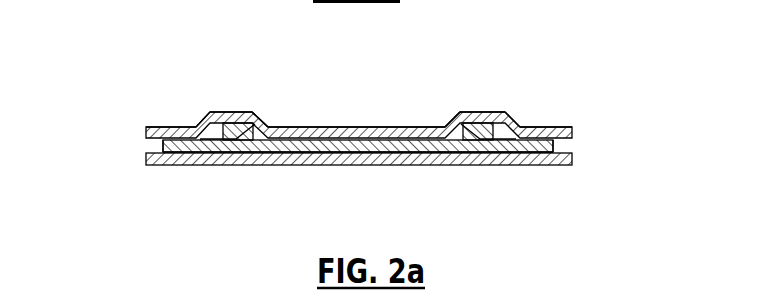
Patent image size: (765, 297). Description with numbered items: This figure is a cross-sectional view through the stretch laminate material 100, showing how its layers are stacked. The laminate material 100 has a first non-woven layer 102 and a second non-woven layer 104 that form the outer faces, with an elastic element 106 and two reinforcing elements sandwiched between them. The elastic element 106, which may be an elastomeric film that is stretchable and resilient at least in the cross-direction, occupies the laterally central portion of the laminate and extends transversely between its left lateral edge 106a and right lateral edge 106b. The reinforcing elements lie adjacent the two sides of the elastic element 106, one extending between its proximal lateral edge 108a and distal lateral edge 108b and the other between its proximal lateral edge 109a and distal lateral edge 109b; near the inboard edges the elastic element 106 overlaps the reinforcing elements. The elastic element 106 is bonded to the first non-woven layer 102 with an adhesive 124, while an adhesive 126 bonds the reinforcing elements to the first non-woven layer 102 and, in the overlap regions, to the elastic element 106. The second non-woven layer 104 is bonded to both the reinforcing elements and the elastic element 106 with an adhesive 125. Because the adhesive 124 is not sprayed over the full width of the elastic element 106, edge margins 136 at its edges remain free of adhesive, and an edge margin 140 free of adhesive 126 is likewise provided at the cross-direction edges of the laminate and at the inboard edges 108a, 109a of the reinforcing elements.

The stretch laminate material 100 is at (588, 75).
The first non-woven layer 102 is at (321, 152).
The second non-woven layer 104 is at (325, 127).
The elastic element 106 is at (422, 153).
The left lateral edge 106a is at (217, 141).
The right lateral edge 106b is at (496, 141).
The proximal lateral edge of reinforcing element 108a is at (272, 126).
The distal lateral edge of reinforcing element 108b is at (163, 146).
The proximal lateral edge of reinforcing element 109a is at (443, 126).
The distal lateral edge of reinforcing element 109b is at (553, 148).
The adhesive 124 is at (293, 165).
The adhesive 125 is at (183, 127).
The adhesive 126 is at (220, 127).
The edge margins 136 is at (239, 140).
The edge margin 140 is at (237, 125).